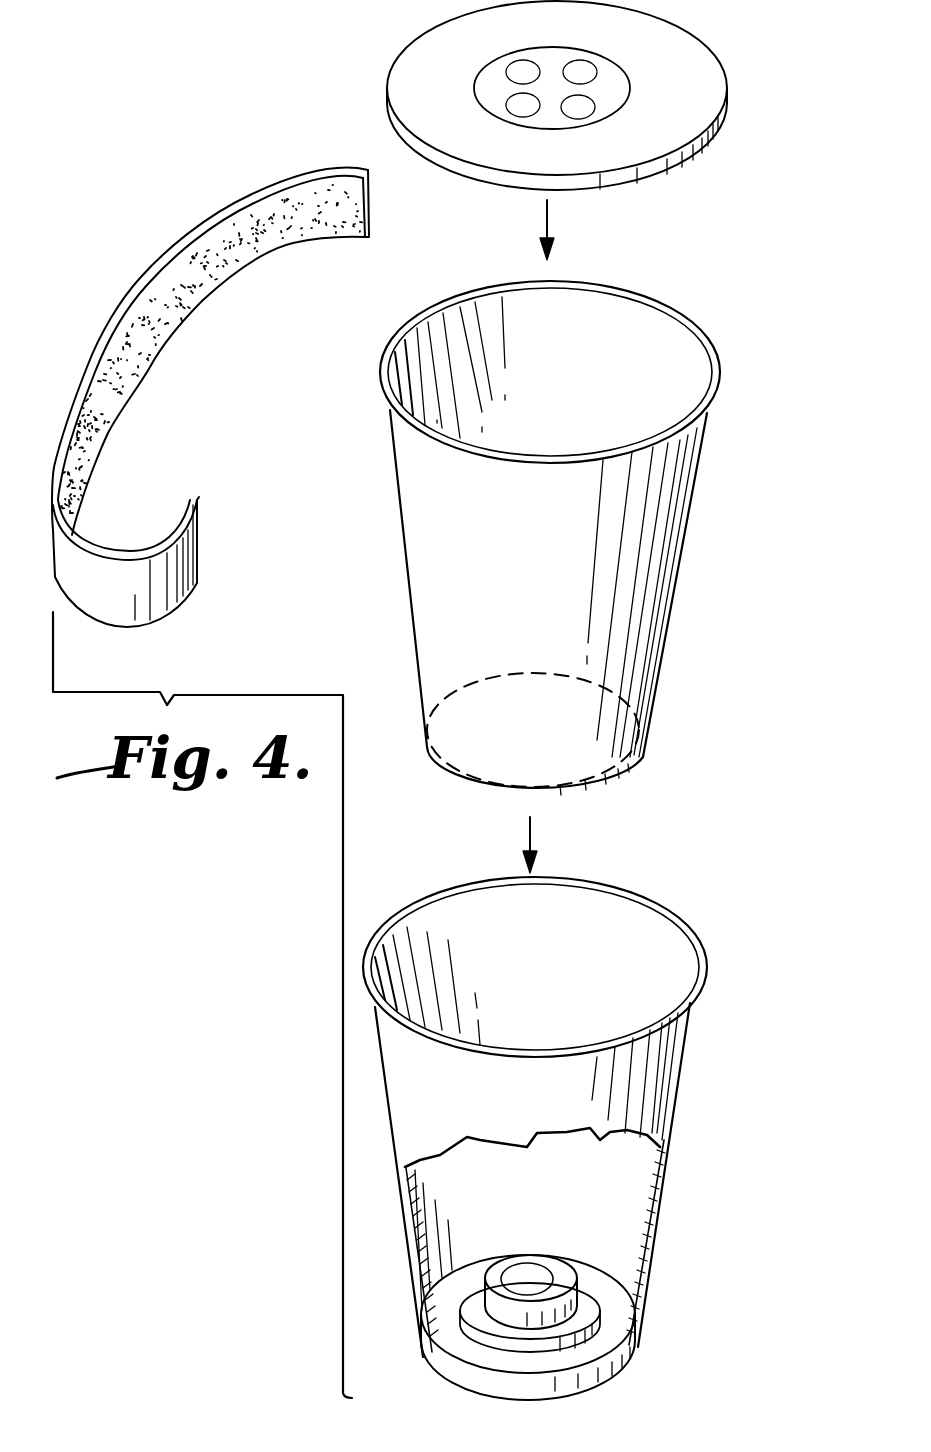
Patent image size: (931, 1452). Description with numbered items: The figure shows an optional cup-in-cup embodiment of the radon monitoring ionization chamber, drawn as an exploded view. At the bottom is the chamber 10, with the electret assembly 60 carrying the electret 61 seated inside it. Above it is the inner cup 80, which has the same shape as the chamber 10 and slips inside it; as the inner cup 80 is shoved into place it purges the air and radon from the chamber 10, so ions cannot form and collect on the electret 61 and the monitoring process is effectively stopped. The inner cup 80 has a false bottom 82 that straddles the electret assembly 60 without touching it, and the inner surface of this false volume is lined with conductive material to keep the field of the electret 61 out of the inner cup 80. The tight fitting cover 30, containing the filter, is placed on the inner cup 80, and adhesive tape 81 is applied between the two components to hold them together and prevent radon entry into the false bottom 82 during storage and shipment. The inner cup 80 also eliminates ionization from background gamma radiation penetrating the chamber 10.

The tight fitting cover 30 is at (728, 90).
The adhesive tape 81 is at (210, 223).
The inner cup 80 is at (572, 538).
The false bottom 82 is at (637, 767).
The chamber 10 is at (663, 1090).
The electret assembly 60 is at (578, 1309).
The electret 61 is at (545, 1280).